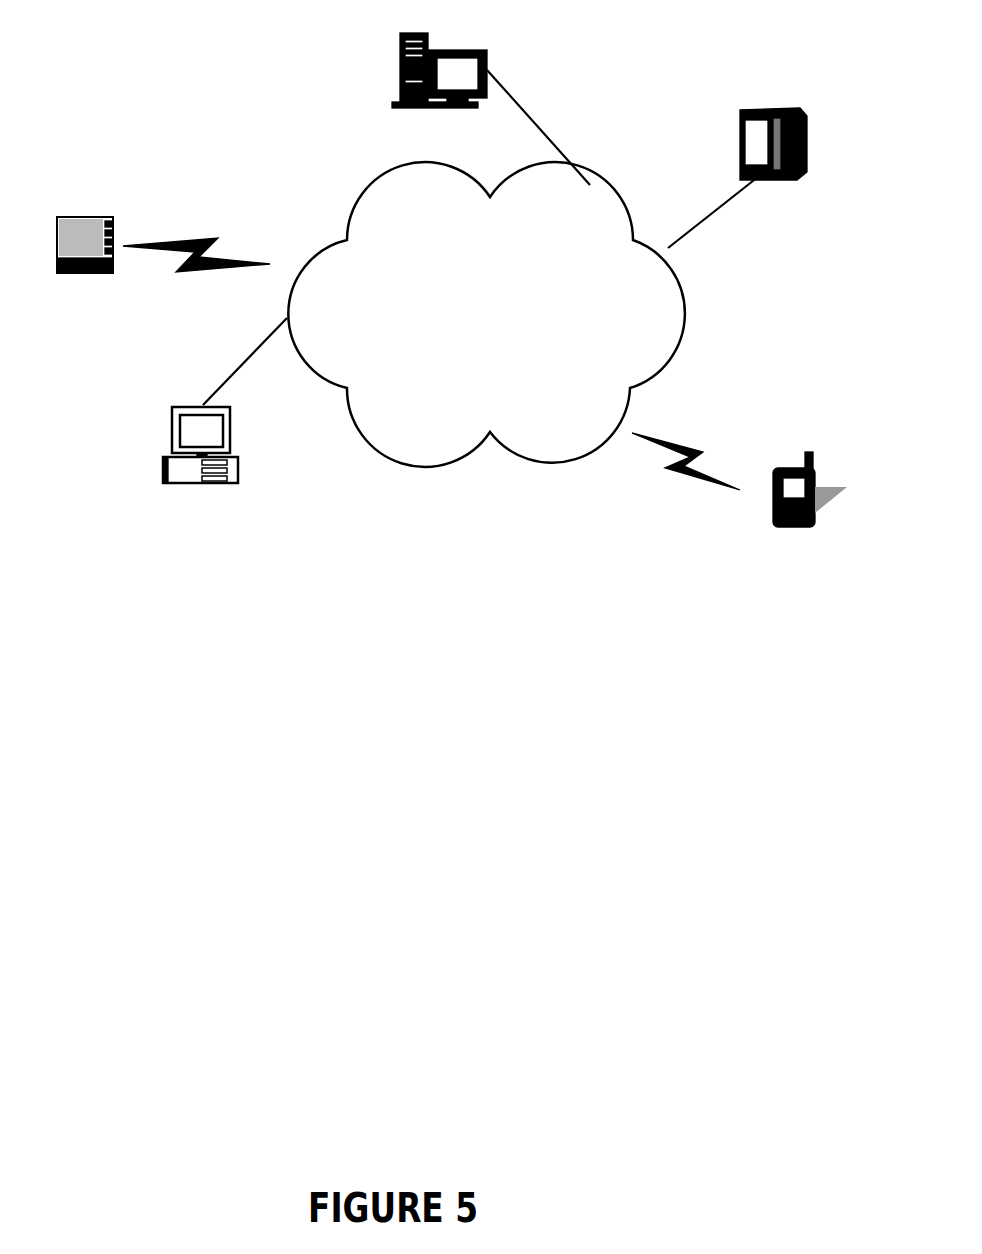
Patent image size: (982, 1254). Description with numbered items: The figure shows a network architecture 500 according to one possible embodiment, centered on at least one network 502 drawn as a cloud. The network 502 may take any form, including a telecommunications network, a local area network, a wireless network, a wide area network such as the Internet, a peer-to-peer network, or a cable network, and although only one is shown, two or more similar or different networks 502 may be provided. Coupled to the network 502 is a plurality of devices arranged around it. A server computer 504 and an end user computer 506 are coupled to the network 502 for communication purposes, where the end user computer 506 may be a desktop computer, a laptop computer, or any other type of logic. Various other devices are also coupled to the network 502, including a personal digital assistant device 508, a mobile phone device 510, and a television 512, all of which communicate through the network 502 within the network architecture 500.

The network architecture 500 is at (393, 767).
The network 502 is at (547, 465).
The server computer 504 is at (400, 70).
The end user computer 506 is at (163, 462).
The personal digital assistant (PDA) device 508 is at (83, 218).
The mobile phone device 510 is at (770, 470).
The television 512 is at (750, 102).